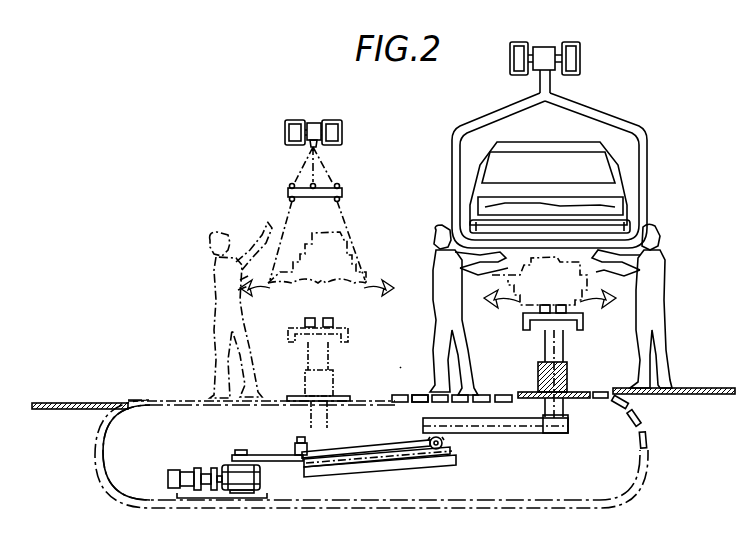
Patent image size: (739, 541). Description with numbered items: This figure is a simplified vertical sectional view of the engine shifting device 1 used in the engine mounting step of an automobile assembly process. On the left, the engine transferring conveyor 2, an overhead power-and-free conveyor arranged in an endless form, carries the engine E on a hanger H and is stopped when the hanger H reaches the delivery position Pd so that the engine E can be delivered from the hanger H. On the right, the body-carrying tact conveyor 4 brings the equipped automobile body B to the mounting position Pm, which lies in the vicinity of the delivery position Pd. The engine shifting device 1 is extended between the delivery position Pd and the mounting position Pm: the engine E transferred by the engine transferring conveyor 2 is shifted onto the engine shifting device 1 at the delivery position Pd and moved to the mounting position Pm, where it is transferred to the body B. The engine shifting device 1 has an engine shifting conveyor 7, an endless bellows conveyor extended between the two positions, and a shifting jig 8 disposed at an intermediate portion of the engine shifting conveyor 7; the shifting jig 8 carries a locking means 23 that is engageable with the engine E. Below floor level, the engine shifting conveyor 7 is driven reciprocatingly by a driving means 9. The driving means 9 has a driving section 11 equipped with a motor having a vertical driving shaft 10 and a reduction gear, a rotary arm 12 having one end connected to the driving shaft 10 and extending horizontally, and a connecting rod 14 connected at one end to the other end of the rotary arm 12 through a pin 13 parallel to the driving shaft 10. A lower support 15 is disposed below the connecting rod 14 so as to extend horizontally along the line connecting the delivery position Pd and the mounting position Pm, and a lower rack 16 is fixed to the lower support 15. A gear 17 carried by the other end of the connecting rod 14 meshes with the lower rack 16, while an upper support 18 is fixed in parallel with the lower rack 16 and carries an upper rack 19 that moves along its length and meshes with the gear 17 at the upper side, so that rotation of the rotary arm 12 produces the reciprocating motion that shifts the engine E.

The engine shifting device 1 is at (398, 359).
The engine transferring conveyor 2 is at (330, 122).
The body-carrying tact conveyor 4 is at (570, 47).
The engine shifting conveyor 7 is at (420, 395).
The shifting jig 8 is at (567, 330).
The driving means 9 is at (222, 446).
The vertical driving shaft 10 is at (240, 451).
The driving section 11 is at (260, 478).
The rotary arm 12 is at (270, 456).
The pin 13 is at (300, 442).
The connecting rod 14 is at (350, 446).
The lower support 15 is at (367, 463).
The lower rack 16 is at (380, 453).
The gear 17 is at (444, 443).
The upper support 18 is at (505, 422).
The upper rack 19 is at (544, 431).
The locking means 23 is at (553, 303).
The hanger H is at (342, 192).
The engine E is at (352, 239).
The automobile body B is at (545, 141).
The delivery position Pd is at (344, 375).
The mounting position Pm is at (585, 373).